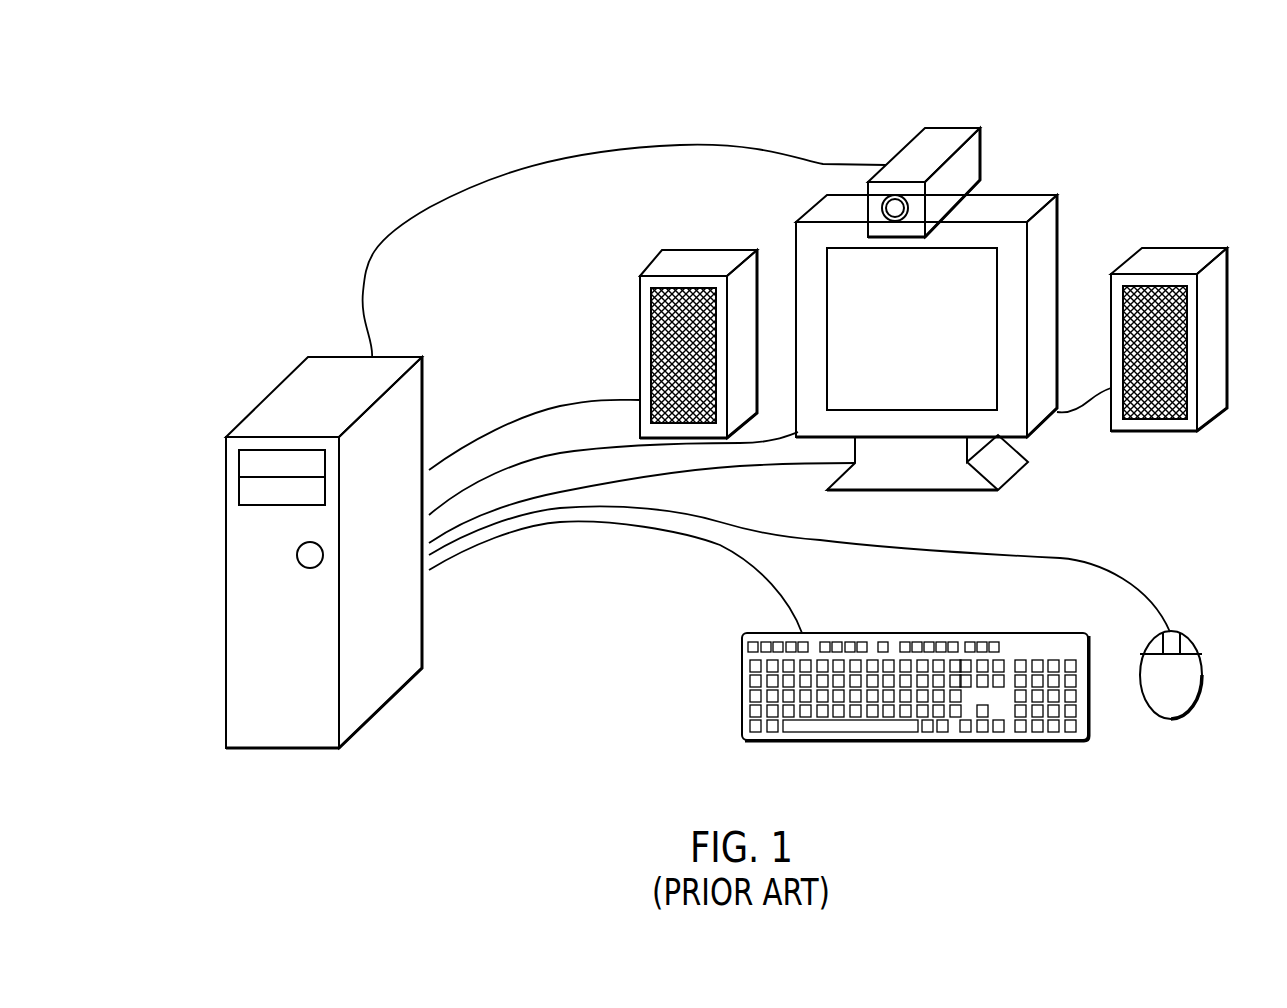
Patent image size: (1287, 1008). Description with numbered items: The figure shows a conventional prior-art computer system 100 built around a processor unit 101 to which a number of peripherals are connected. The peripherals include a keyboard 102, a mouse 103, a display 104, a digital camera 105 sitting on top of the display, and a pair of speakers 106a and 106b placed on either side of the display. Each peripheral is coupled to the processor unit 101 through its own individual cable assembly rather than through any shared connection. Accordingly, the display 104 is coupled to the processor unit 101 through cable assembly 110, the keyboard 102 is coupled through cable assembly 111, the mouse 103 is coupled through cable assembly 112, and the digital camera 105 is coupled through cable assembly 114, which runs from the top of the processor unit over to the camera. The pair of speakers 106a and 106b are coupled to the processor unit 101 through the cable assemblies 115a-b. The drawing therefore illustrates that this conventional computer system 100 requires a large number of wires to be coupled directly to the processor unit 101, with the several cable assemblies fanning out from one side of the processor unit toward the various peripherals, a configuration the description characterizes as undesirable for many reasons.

The computer system 100 is at (386, 118).
The processor unit 101 is at (282, 408).
The keyboard 102 is at (745, 695).
The mouse 103 is at (1185, 687).
The display 104 is at (1043, 227).
The digital camera 105 is at (942, 140).
The speaker 106a is at (1183, 262).
The speaker 106b is at (693, 265).
The cable assembly 110 is at (778, 467).
The cable assembly 111 is at (697, 536).
The cable assembly 112 is at (1059, 556).
The cable assembly 114 is at (660, 145).
The cable assemblies 115a-b is at (530, 457).